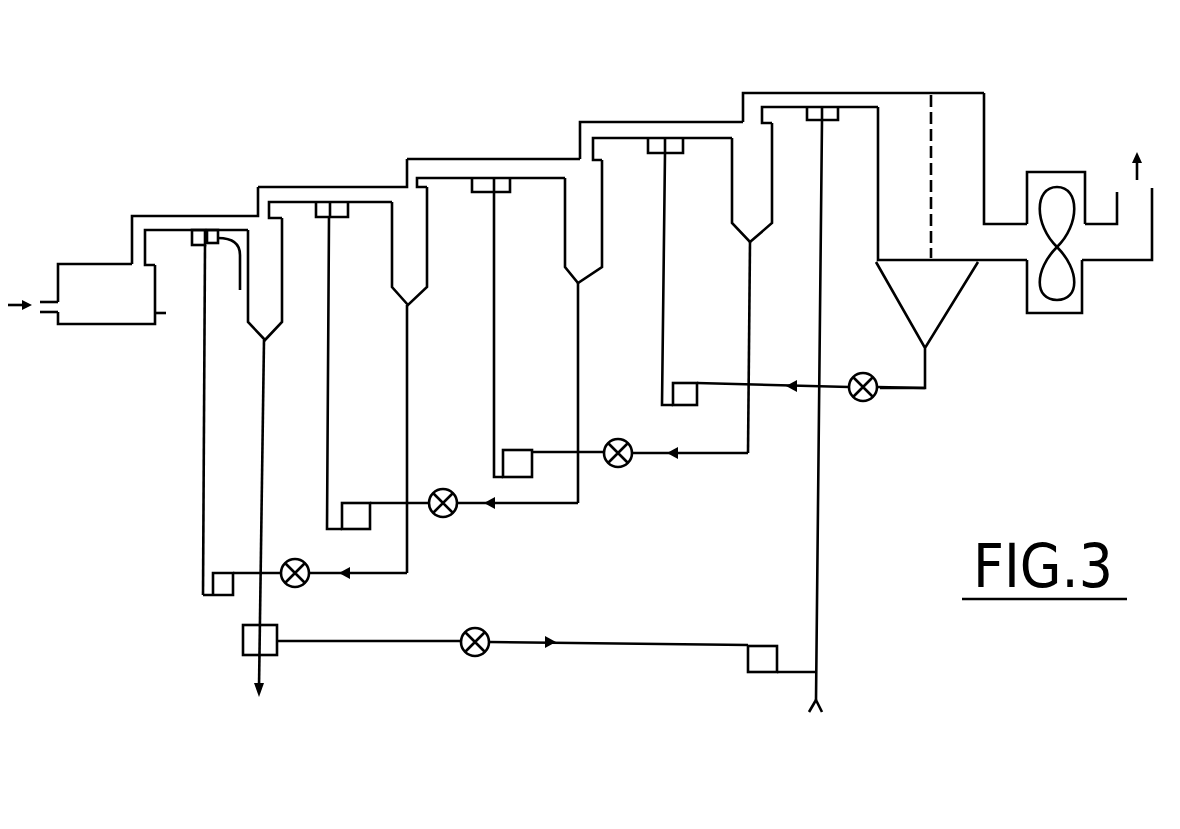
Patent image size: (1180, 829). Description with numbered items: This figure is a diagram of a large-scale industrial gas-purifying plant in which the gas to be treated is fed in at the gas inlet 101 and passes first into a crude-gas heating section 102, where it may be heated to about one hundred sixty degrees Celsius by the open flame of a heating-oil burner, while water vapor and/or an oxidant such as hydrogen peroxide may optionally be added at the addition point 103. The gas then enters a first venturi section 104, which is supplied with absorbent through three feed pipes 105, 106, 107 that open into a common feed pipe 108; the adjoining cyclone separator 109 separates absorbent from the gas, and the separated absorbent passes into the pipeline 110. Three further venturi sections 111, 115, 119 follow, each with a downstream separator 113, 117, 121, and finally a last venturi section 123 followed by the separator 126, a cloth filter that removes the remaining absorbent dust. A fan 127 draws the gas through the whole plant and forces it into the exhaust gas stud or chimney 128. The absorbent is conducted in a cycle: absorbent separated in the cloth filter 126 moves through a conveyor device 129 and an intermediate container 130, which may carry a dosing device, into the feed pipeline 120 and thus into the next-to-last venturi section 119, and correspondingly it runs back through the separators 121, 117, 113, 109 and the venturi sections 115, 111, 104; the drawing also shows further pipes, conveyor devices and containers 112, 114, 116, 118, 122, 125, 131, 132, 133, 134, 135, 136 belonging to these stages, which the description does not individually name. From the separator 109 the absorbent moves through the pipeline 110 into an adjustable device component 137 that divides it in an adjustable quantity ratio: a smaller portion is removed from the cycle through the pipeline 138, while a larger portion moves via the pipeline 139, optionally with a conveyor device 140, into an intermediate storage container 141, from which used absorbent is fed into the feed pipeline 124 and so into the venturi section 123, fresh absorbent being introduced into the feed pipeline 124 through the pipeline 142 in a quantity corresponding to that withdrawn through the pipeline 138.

The gas inlet 101 is at (50, 317).
The crude-gas heating section 102 is at (117, 310).
The oxidant addition point 103 is at (160, 315).
The first venturi section 104 is at (152, 212).
The feed pipe 105 is at (192, 238).
The feed pipe 106 is at (212, 243).
The feed pipe 107 is at (240, 290).
The common feed pipe 108 is at (205, 388).
The separator 109 is at (272, 320).
The pipeline 110 is at (263, 448).
The venturi section 111 is at (290, 180).
The downpipe 112 is at (328, 375).
The separator 113 is at (420, 287).
The cyclone discharge pipe 114 is at (408, 418).
The venturi section 115 is at (437, 157).
The downpipe 116 is at (494, 342).
The separator 117 is at (597, 267).
The cyclone discharge pipe 118 is at (580, 383).
The venturi section 119 is at (600, 120).
The feed pipeline 120 is at (665, 307).
The separator 121 is at (758, 215).
The cyclone discharge pipe 122 is at (750, 320).
The last venturi section 123 is at (780, 88).
The feed pipeline 124 is at (835, 308).
The final cyclone separator 125 is at (927, 375).
The separator 126 is at (973, 145).
The fan 127 is at (1048, 317).
The exhaust gas stud or chimney 128 is at (1137, 247).
The conveyor device 129 is at (873, 400).
The intermediate container 130 is at (682, 393).
The control valve 131 is at (618, 467).
The feed box 132 is at (508, 462).
The control valve 133 is at (443, 515).
The feed box 134 is at (347, 517).
The control valve 135 is at (297, 587).
The feed box 136 is at (225, 598).
The adjustable device component 137 is at (270, 653).
The pipeline 138 is at (253, 668).
The pipeline 139 is at (400, 643).
The conveyor device 140 is at (477, 657).
The intermediate storage container 141 is at (748, 663).
The pipeline 142 is at (818, 688).